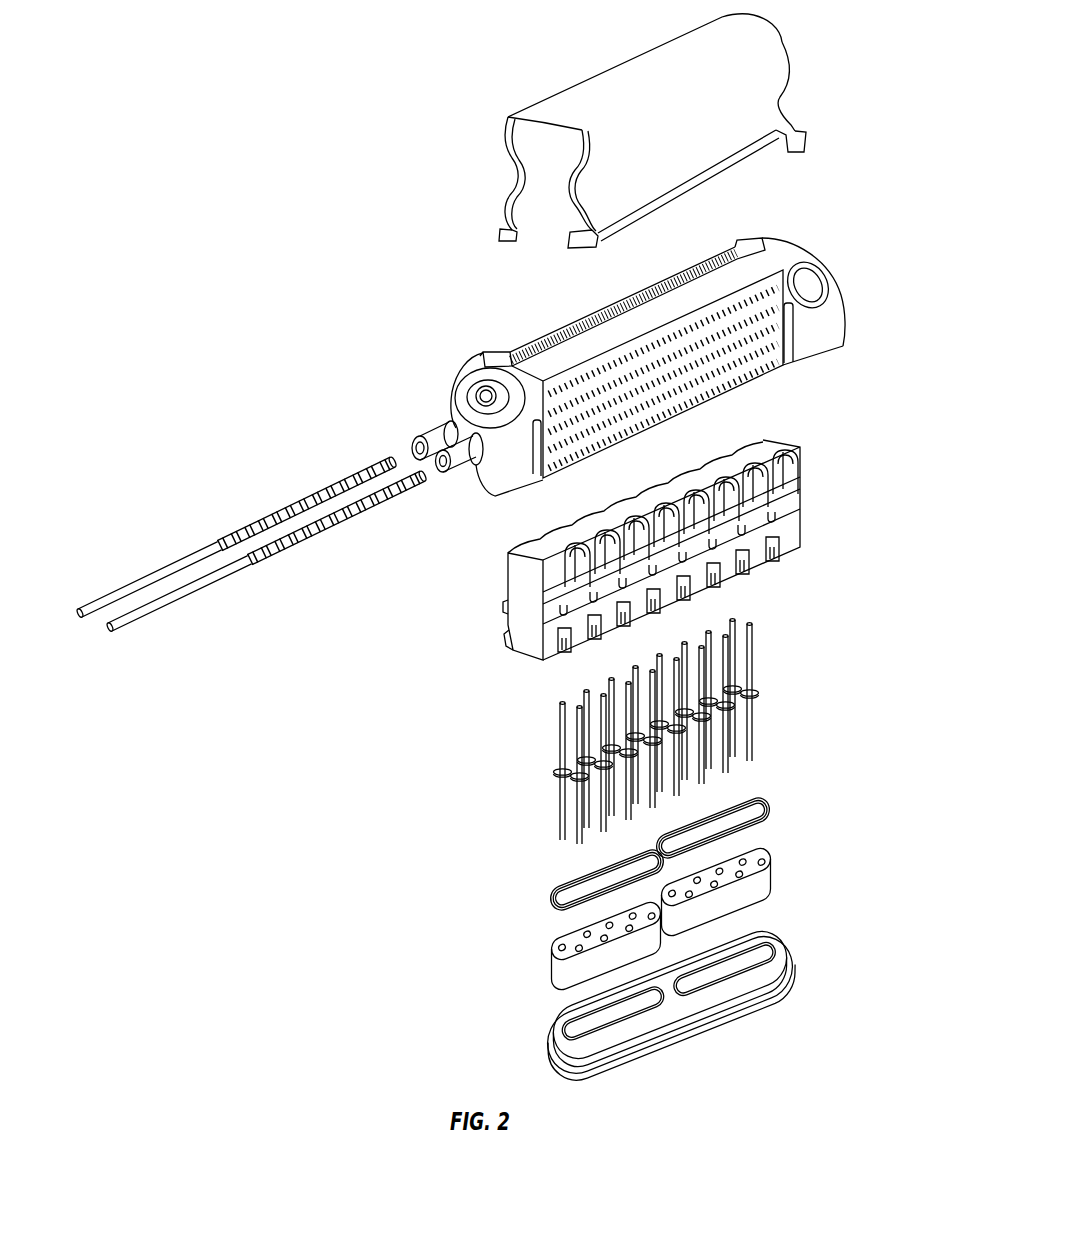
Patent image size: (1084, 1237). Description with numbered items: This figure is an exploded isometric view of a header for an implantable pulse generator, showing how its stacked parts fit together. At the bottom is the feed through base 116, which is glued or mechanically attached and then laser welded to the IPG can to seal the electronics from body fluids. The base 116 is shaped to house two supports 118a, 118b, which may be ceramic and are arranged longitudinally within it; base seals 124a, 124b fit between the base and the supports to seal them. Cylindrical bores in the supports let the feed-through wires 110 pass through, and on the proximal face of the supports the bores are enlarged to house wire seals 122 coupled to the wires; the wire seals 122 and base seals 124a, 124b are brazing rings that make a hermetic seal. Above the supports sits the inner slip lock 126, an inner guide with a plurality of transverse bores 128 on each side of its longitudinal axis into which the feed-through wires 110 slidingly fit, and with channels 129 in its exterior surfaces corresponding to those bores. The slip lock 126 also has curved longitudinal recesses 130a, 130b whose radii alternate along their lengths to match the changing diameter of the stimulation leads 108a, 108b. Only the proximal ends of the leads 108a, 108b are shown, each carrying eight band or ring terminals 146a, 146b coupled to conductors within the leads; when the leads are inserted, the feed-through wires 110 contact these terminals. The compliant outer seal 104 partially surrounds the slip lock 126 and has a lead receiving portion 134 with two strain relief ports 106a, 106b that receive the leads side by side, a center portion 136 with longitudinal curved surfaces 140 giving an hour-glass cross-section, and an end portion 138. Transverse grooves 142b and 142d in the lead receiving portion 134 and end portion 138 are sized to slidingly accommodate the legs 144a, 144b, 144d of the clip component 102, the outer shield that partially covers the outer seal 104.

The clip component 102 is at (646, 131).
The outer seal 104 is at (632, 378).
The strain relief port 106a is at (431, 426).
The strain relief port 106b is at (464, 455).
The stimulation lead 108a is at (236, 529).
The stimulation lead 108b is at (266, 568).
The feed-through wires 110 is at (654, 731).
The feed through base 116 is at (547, 1050).
The support 118a is at (572, 946).
The support 118b is at (773, 880).
The wire seals 122 is at (553, 771).
The base seal 124a is at (553, 897).
The base seal 124b is at (771, 810).
The inner slip lock 126 is at (653, 554).
The transverse bores 128 is at (775, 554).
The channels 129 is at (791, 450).
The curved recess 130a is at (509, 606).
The curved recess 130b is at (522, 635).
The lead receiving portion 134 is at (466, 377).
The center portion 136 is at (578, 318).
The end portion 138 is at (830, 282).
The longitudinal curved surfaces 140 is at (731, 337).
The transverse groove 142b is at (535, 452).
The transverse groove 142d is at (796, 345).
The leg 144a is at (499, 232).
The leg 144b is at (597, 244).
The leg 144d is at (798, 135).
The terminals 146a is at (313, 491).
The terminals 146b is at (327, 532).